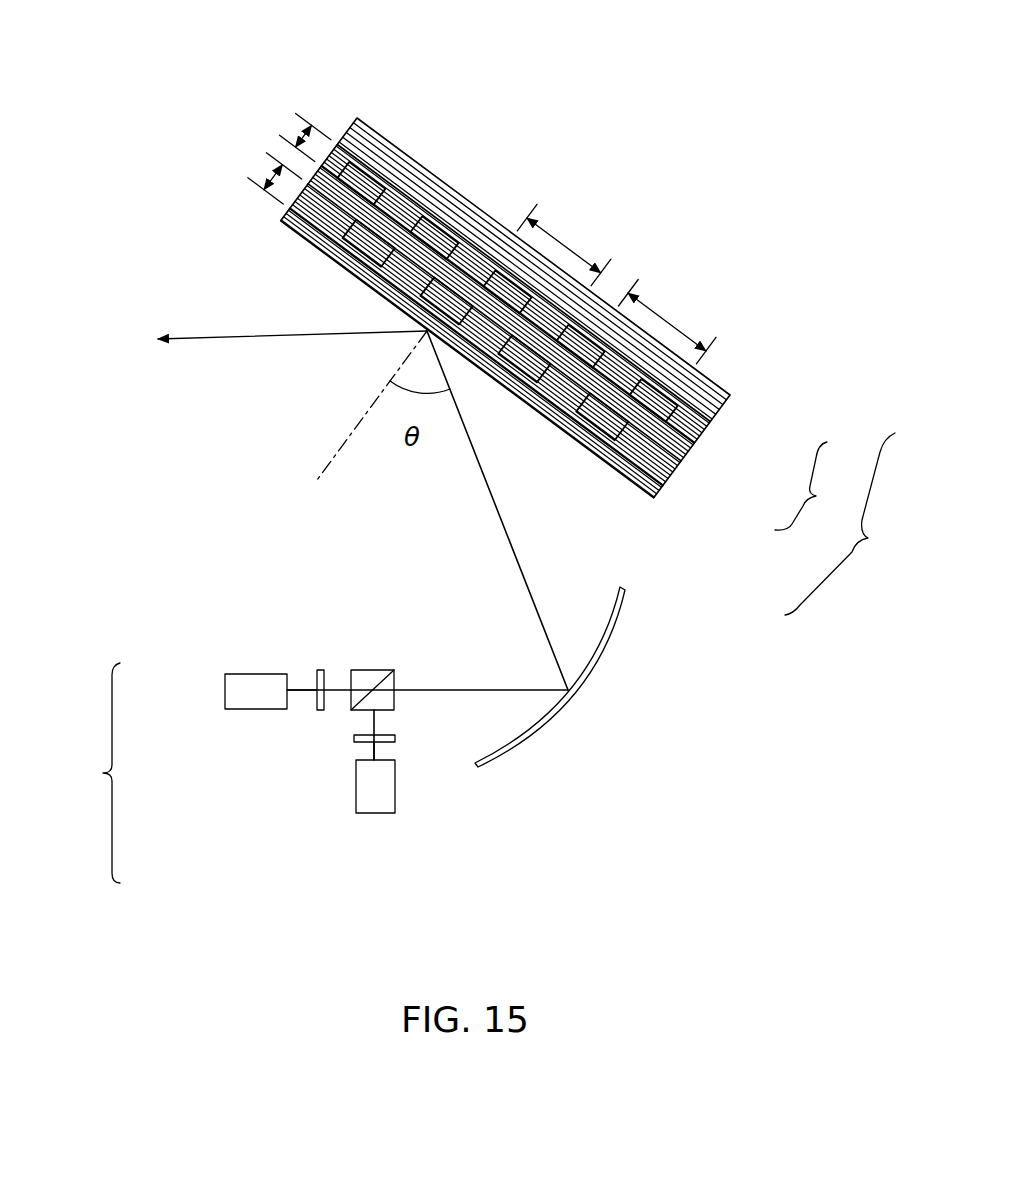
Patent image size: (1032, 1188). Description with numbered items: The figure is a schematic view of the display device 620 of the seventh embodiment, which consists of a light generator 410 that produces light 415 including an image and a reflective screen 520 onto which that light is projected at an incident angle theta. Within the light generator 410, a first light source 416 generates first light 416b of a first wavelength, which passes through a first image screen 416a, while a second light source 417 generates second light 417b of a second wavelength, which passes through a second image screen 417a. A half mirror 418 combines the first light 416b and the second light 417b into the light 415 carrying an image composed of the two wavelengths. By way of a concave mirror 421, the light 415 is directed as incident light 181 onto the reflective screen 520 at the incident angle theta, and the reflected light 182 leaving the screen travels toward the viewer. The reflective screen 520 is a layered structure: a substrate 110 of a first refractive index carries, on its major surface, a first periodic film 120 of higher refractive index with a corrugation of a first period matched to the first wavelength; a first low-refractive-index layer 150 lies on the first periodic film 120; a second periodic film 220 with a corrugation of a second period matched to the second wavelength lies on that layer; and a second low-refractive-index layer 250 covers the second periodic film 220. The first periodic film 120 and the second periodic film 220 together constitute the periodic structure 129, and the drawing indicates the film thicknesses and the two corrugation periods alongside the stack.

The display device 620 is at (521, 302).
The substrate 110 is at (728, 407).
The first periodic film 120 is at (712, 433).
The first low-refractive-index layer 150 is at (697, 452).
The second periodic film 220 is at (683, 475).
The second low-refractive-index layer 250 is at (668, 497).
The periodic structure 129 is at (815, 486).
The reflective screen 520 is at (846, 524).
The incident light 181 is at (493, 512).
The reflected light 182 is at (218, 338).
The light generator 410 is at (314, 743).
The light 415 is at (460, 690).
The first light source 416 is at (233, 694).
The first image screen 416a is at (318, 704).
The first light 416b is at (300, 693).
The half mirror 418 is at (350, 703).
The second image screen 417a is at (353, 735).
The second light source 417 is at (355, 806).
The second light 417b is at (383, 752).
The concave mirror 421 is at (545, 730).